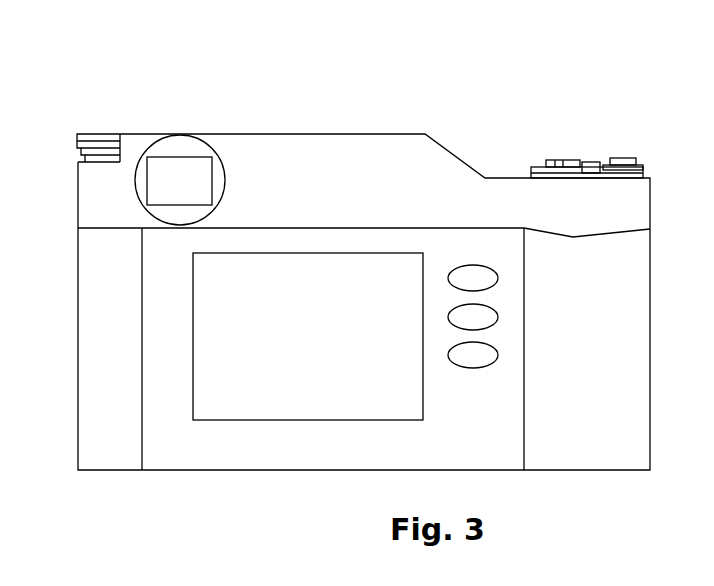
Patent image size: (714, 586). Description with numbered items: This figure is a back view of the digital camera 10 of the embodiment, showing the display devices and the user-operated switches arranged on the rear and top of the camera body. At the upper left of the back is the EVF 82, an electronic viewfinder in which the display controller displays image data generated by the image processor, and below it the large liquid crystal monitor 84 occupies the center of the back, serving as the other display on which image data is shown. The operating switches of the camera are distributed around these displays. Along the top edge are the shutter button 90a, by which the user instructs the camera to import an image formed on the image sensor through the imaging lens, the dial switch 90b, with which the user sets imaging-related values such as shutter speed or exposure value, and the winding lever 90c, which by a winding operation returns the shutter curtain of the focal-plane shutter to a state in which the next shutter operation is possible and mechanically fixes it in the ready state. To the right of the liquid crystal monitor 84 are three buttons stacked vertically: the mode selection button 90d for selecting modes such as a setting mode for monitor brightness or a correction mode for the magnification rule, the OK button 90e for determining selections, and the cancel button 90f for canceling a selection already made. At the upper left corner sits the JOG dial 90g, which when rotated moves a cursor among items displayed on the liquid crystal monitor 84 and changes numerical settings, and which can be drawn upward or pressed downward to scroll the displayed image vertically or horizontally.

The digital camera 10 is at (417, 100).
The EVF (Electronic View Finder) 82 is at (182, 157).
The liquid crystal monitor 84 is at (244, 273).
The shutter button 90a is at (627, 159).
The dial switch 90b is at (592, 162).
The winding lever 90c is at (531, 167).
The mode selection button 90d is at (498, 278).
The OK button 90e is at (498, 317).
The cancel button 90f is at (498, 355).
The JOG dial 90g is at (95, 133).